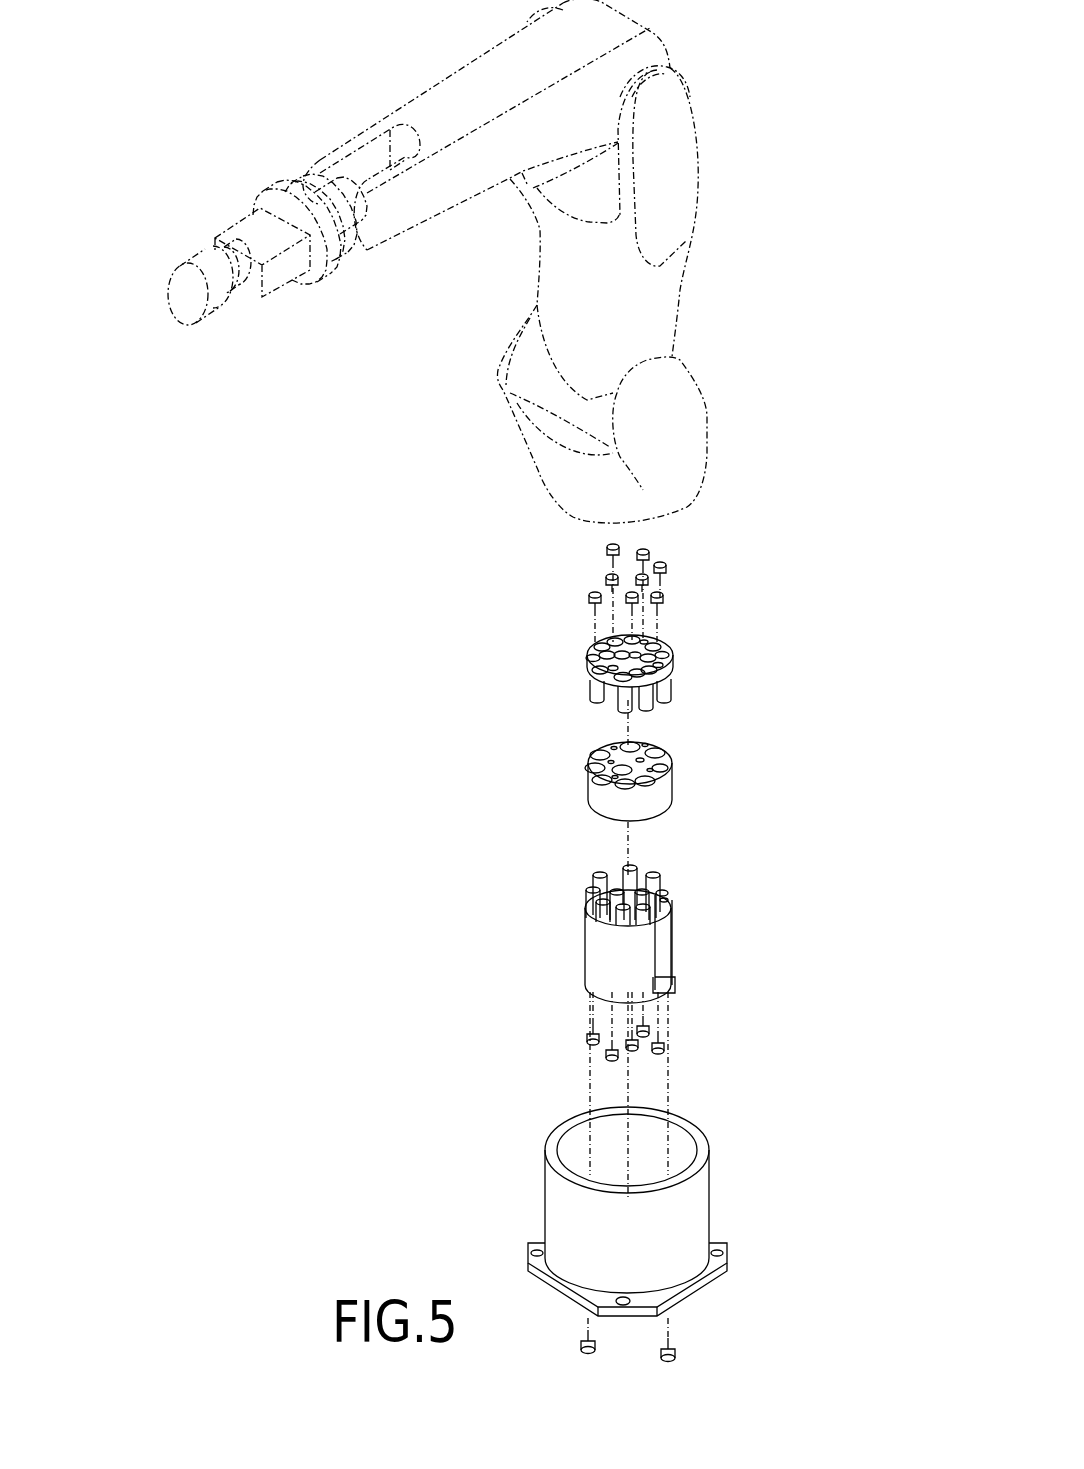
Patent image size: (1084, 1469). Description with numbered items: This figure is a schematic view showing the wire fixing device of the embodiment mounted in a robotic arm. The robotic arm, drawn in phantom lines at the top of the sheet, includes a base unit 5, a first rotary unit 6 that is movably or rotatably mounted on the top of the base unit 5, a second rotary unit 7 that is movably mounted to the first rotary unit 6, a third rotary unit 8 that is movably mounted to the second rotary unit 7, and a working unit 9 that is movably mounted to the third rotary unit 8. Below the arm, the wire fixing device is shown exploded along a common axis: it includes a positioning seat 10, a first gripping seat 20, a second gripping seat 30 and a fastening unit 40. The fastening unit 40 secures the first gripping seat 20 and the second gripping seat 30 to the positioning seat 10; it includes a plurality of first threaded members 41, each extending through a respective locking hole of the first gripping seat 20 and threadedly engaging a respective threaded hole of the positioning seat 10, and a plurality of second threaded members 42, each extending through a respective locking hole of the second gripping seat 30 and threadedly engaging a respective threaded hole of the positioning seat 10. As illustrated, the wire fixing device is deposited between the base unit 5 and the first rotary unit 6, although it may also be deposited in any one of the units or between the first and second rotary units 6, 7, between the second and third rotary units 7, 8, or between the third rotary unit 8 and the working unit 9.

The base unit 5 is at (702, 1210).
The first rotary unit 6 is at (690, 398).
The second rotary unit 7 is at (693, 207).
The third rotary unit 8 is at (420, 97).
The working unit 9 is at (237, 224).
The positioning seat 10 is at (672, 783).
The first gripping seat 20 is at (672, 653).
The second gripping seat 30 is at (672, 932).
The fastening unit 40 is at (675, 1044).
The first threaded members 41 is at (668, 601).
The second threaded members 42 is at (672, 1356).